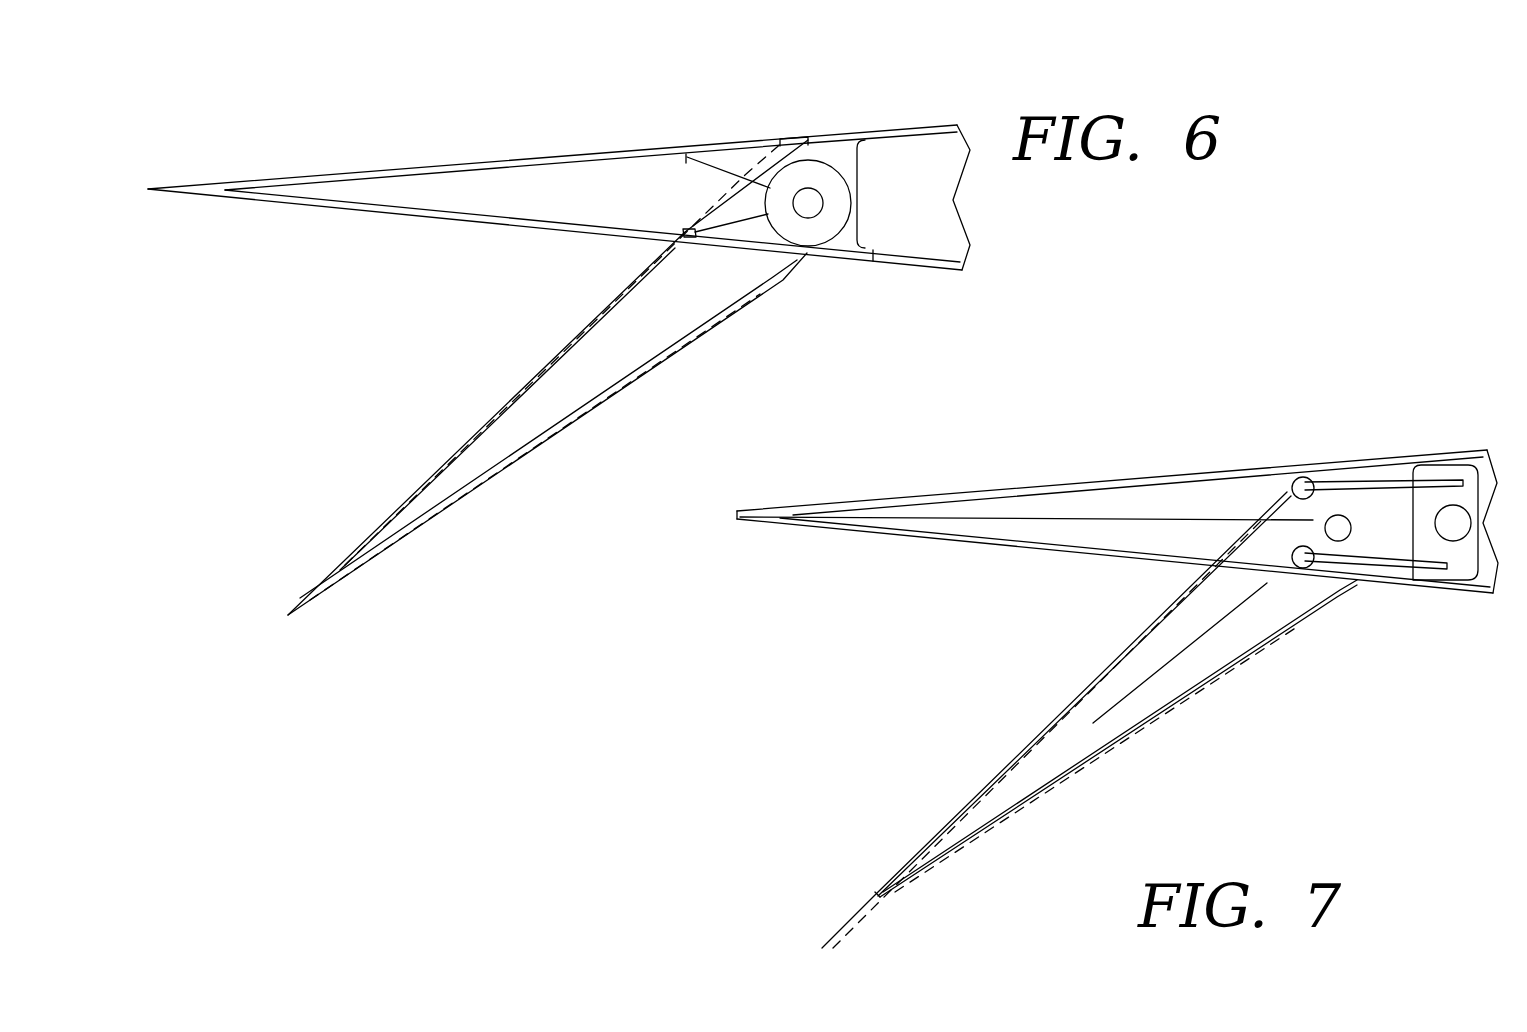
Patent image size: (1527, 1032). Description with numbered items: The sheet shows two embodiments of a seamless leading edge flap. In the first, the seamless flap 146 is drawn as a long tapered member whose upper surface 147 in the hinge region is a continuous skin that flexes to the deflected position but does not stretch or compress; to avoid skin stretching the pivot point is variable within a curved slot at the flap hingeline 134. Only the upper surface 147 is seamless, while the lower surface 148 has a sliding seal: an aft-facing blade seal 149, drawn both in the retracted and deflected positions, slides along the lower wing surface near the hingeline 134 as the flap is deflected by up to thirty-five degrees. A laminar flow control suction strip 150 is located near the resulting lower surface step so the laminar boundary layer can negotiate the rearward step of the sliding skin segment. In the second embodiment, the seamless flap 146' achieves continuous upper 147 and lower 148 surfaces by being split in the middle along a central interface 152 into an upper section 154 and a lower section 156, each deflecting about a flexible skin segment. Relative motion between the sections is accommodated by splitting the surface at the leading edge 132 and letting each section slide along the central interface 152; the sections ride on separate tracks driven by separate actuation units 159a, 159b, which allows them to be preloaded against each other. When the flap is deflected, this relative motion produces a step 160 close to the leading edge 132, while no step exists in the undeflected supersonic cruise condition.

In FIG. 6, the seamless flap 146 is at (561, 247).
In FIG. 7, the seamless flap 146' is at (1115, 527).
In FIG. 6, the upper surface 147 is at (544, 150).
In FIG. 7, the upper surface 147 is at (1072, 480).
In FIG. 6, the lower surface 148 is at (537, 237).
In FIG. 7, the lower surface 148 is at (1072, 556).
In FIG. 6, the hingeline 134 is at (822, 135).
In FIG. 6, the laminar flow control suction strip 150 is at (893, 261).
In FIG. 6, the aft-facing blade seal 149 is at (800, 281).
In FIG. 7, the leading edge 132 is at (820, 945).
In FIG. 7, the central interface 152 is at (890, 520).
In FIG. 7, the upper section 154 is at (968, 499).
In FIG. 7, the lower section 156 is at (972, 530).
In FIG. 7, the actuation unit 159a is at (1442, 467).
In FIG. 7, the actuation unit 159b is at (1460, 594).
In FIG. 7, the step 160 is at (875, 892).